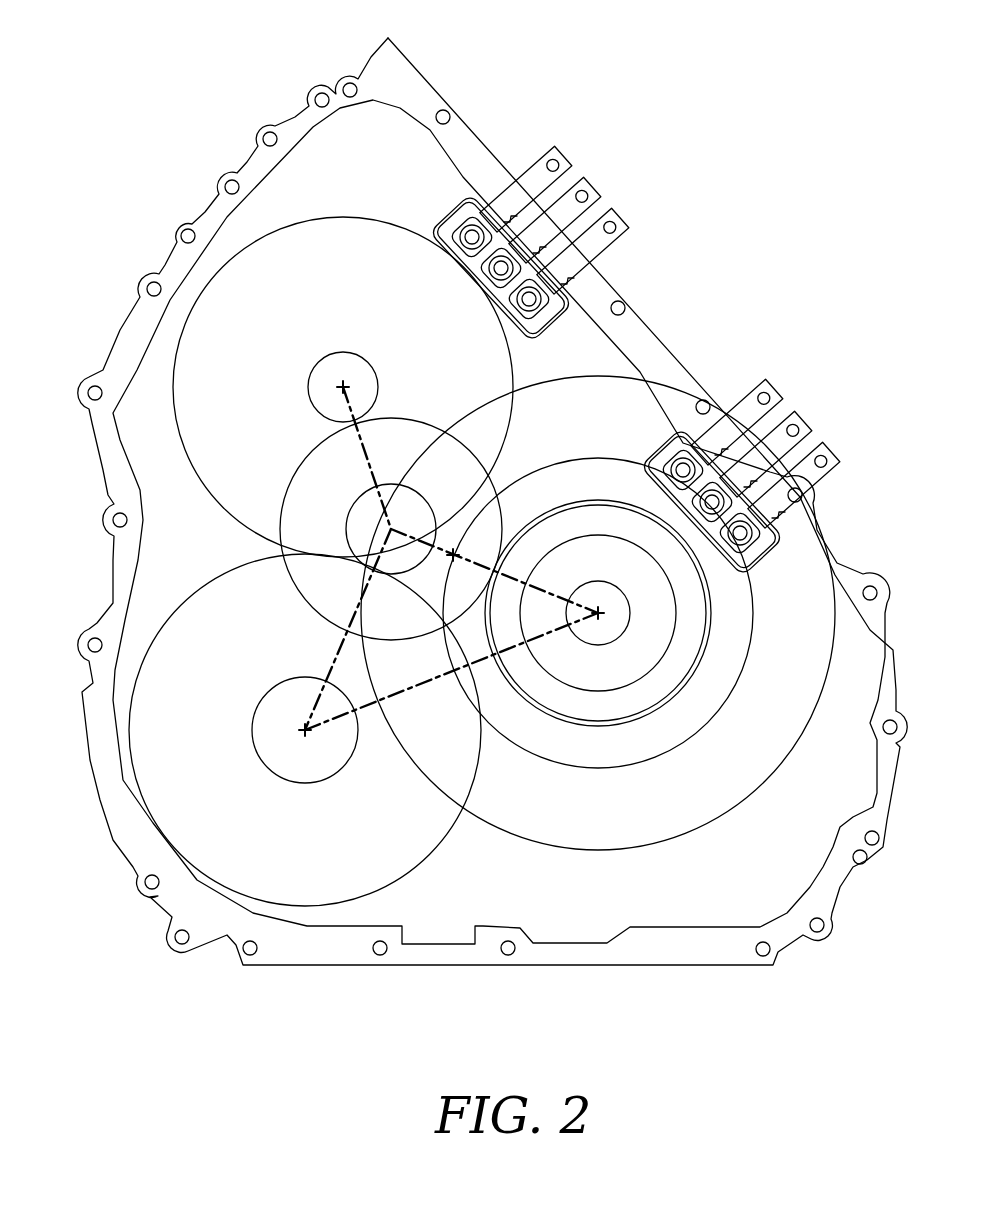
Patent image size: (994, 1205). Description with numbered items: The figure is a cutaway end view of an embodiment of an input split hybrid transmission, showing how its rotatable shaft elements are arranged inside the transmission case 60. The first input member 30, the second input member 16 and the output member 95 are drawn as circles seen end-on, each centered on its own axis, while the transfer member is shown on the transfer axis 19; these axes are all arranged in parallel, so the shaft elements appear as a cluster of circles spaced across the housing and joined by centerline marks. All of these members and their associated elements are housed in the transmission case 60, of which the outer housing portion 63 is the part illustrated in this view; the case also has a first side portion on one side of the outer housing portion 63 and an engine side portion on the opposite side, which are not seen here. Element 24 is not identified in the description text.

The second input member 16 is at (380, 350).
The transfer axis 19 is at (440, 495).
The transmission housing 24 is at (165, 357).
The first input member 30 is at (638, 640).
The transmission case 60 is at (470, 112).
The outer housing portion 63 is at (505, 160).
The output member 95 is at (258, 772).